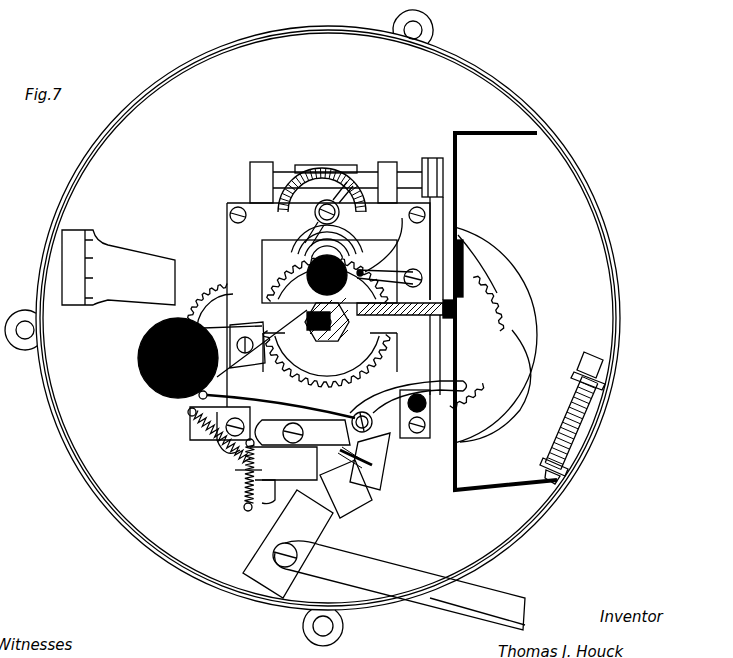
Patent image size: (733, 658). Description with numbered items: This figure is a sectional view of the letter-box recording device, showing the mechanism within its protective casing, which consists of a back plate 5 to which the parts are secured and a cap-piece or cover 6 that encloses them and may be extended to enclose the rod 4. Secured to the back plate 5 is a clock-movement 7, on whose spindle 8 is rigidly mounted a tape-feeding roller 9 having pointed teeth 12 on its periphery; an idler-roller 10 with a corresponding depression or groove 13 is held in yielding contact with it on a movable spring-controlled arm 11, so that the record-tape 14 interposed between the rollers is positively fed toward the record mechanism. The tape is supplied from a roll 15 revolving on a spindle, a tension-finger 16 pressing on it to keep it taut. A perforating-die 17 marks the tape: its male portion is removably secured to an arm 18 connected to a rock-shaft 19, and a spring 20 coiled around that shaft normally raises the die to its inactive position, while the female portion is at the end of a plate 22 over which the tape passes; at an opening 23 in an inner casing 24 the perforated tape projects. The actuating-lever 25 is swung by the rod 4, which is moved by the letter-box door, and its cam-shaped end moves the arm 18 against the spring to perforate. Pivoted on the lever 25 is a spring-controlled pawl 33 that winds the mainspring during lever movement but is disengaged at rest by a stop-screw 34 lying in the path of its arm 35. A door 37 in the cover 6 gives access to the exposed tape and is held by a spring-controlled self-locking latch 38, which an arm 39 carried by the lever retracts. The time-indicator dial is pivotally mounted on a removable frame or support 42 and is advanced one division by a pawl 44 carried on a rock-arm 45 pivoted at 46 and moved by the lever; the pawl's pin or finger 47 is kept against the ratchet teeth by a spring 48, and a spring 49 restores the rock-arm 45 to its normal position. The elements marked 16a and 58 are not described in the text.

The rod 4 is at (477, 618).
The back plate 5 is at (223, 44).
The cap-piece or cover 6 is at (60, 206).
The clock-movement 7 is at (378, 266).
The spindle 8 is at (316, 336).
The tape-feeding roller 9 is at (336, 337).
The idler-roller 10 is at (240, 294).
The spring-controlled arm 11 is at (396, 270).
The pointed teeth 12 is at (300, 312).
The depression or groove 13 is at (308, 286).
The record-tape 14 is at (247, 353).
The roll 15 is at (140, 362).
The tension-finger 16 is at (200, 398).
The bar 16a is at (466, 264).
The perforating-die 17 is at (480, 298).
The arm 18 is at (455, 197).
The rock-shaft 19 is at (368, 175).
The spring 20 is at (322, 174).
The plate 22 is at (424, 320).
The opening 23 is at (447, 320).
The inner casing 24 is at (457, 411).
The actuating-lever 25 is at (332, 540).
The spring-controlled pawl 33 is at (392, 440).
The stop-screw 34 is at (352, 460).
The arm 35 is at (370, 461).
The door 37 is at (600, 412).
The spring-controlled self-locking latch 38 is at (568, 447).
The arm 39 is at (348, 506).
The frame or support 42 is at (118, 267).
The pawl 44 is at (302, 432).
The rock-arm 45 is at (276, 463).
The pivot 46 is at (246, 506).
The pin or finger 47 is at (355, 418).
The spring 48 is at (244, 487).
The spring 49 is at (205, 434).
The arm 58 is at (408, 397).